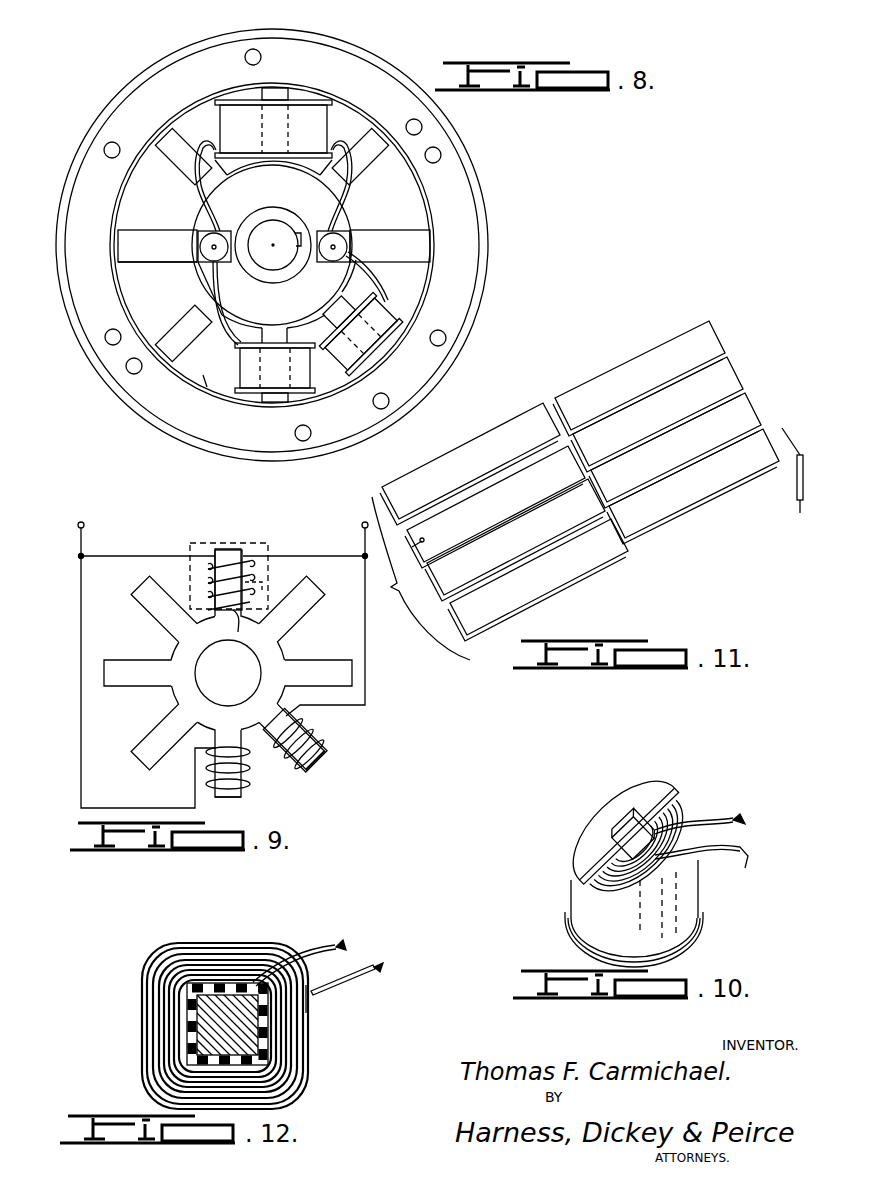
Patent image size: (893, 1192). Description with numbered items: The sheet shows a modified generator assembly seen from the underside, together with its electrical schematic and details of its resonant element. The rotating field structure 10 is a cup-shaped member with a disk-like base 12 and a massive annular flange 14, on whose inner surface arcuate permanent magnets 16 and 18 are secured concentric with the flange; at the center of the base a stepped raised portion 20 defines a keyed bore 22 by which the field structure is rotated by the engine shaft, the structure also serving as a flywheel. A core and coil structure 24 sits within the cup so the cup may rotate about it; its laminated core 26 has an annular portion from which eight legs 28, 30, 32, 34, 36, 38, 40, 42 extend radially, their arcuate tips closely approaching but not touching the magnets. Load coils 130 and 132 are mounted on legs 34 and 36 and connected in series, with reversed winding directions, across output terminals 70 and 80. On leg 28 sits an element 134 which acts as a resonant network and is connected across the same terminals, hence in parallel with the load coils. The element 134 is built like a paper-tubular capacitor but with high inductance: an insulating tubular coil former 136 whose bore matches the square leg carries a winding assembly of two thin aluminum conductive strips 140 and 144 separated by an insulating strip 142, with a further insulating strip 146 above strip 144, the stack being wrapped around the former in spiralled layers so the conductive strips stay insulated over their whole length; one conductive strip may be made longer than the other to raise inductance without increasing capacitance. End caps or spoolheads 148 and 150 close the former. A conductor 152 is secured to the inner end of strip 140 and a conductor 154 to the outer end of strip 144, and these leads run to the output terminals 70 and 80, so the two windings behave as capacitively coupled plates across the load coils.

In FIG. 8, the field structure 10 is at (386, 46).
In FIG. 8, the base 12 is at (206, 382).
In FIG. 8, the annular flange 14 is at (92, 323).
In FIG. 8, the permanent magnet 16 is at (201, 98).
In FIG. 8, the permanent magnet 18 is at (373, 375).
In FIG. 8, the raised portion 20 is at (277, 210).
In FIG. 8, the keyed bore 22 is at (268, 262).
In FIG. 8, the core and coil structure 24 is at (183, 282).
In FIG. 8, the core 26 is at (193, 300).
In FIG. 9, the leg 28 is at (226, 548).
In FIG. 12, the leg 28 is at (262, 1028).
In FIG. 8, the leg 30 is at (374, 136).
In FIG. 8, the leg 32 is at (398, 254).
In FIG. 8, the leg 34 is at (403, 330).
In FIG. 9, the leg 34 is at (313, 757).
In FIG. 8, the leg 36 is at (277, 402).
In FIG. 9, the leg 36 is at (245, 792).
In FIG. 8, the leg 38 is at (172, 350).
In FIG. 8, the leg 40 is at (120, 250).
In FIG. 8, the leg 42 is at (168, 133).
In FIG. 8, the output terminal 70 is at (350, 238).
In FIG. 9, the output terminal 70 is at (362, 526).
In FIG. 8, the output terminal 80 is at (198, 238).
In FIG. 9, the output terminal 80 is at (84, 522).
In FIG. 8, the load coil 130 is at (390, 323).
In FIG. 9, the load coil 130 is at (300, 740).
In FIG. 8, the load coil 132 is at (255, 393).
In FIG. 9, the load coil 132 is at (210, 792).
In FIG. 8, the element 134 is at (344, 85).
In FIG. 9, the element 134 is at (260, 540).
In FIG. 10, the element 134 is at (565, 889).
In FIG. 10, the coil former 136 is at (670, 820).
In FIG. 12, the coil former 136 is at (265, 1045).
In FIG. 11, the conductive strip 140 is at (682, 505).
In FIG. 12, the conductive strip 140 is at (240, 977).
In FIG. 9, the insulating strip 142 is at (235, 612).
In FIG. 11, the insulating strip 142 is at (662, 471).
In FIG. 12, the insulating strip 142 is at (253, 980).
In FIG. 9, the conductive strip 144 is at (215, 572).
In FIG. 11, the conductive strip 144 is at (640, 438).
In FIG. 12, the conductive strip 144 is at (210, 973).
In FIG. 11, the insulating strip 146 is at (620, 403).
In FIG. 12, the insulating strip 146 is at (190, 948).
In FIG. 10, the end cap 148 is at (582, 829).
In FIG. 10, the end cap 150 is at (578, 953).
In FIG. 8, the conductor 152 is at (350, 170).
In FIG. 9, the conductor 152 is at (304, 558).
In FIG. 11, the conductor 152 is at (798, 525).
In FIG. 10, the conductor 152 is at (742, 814).
In FIG. 12, the conductor 152 is at (347, 938).
In FIG. 8, the conductor 154 is at (199, 195).
In FIG. 9, the conductor 154 is at (115, 555).
In FIG. 11, the conductor 154 is at (430, 597).
In FIG. 10, the conductor 154 is at (727, 863).
In FIG. 12, the conductor 154 is at (386, 962).